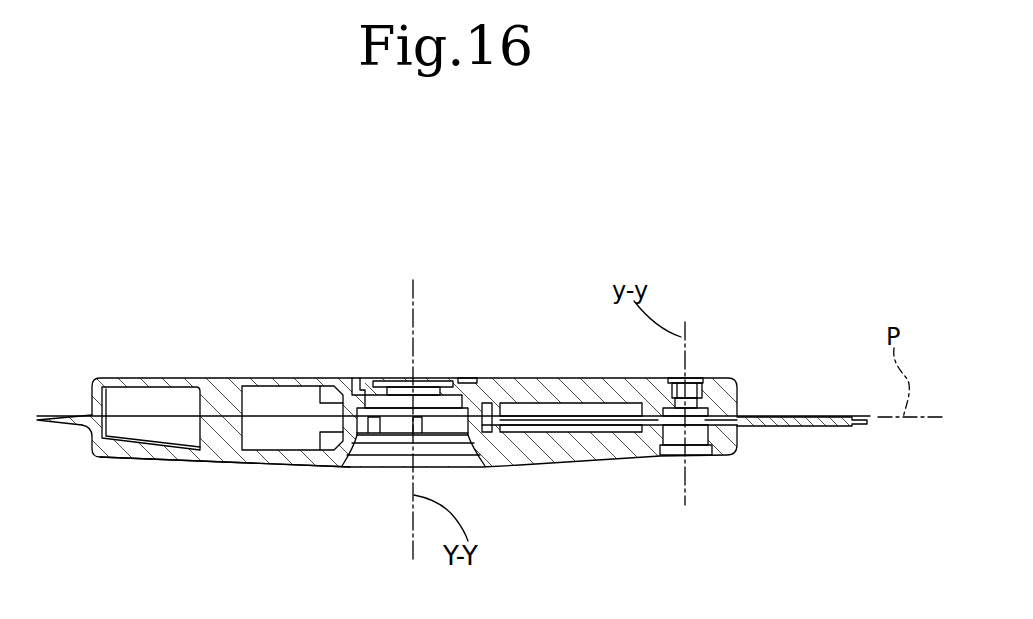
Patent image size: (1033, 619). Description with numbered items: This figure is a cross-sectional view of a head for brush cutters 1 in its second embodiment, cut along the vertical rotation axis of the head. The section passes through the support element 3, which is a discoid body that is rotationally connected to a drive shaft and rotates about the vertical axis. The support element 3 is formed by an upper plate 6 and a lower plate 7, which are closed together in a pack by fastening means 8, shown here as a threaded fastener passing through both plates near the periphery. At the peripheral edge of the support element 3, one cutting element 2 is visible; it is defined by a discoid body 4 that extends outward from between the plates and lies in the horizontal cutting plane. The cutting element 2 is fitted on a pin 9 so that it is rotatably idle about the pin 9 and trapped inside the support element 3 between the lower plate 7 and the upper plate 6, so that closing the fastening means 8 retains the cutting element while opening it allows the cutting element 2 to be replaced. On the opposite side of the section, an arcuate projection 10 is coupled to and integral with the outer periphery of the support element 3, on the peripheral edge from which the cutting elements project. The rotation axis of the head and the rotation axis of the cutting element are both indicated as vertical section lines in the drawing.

The head for brush cutters 1 is at (658, 232).
The cutting element 2 is at (817, 388).
The support element 3 is at (92, 377).
The discoid body 4 is at (805, 425).
The upper plate 6 is at (212, 400).
The lower plate 7 is at (218, 445).
The fastening means 8 is at (703, 377).
The pin 9 is at (693, 437).
The arcuate projection 10 is at (60, 426).